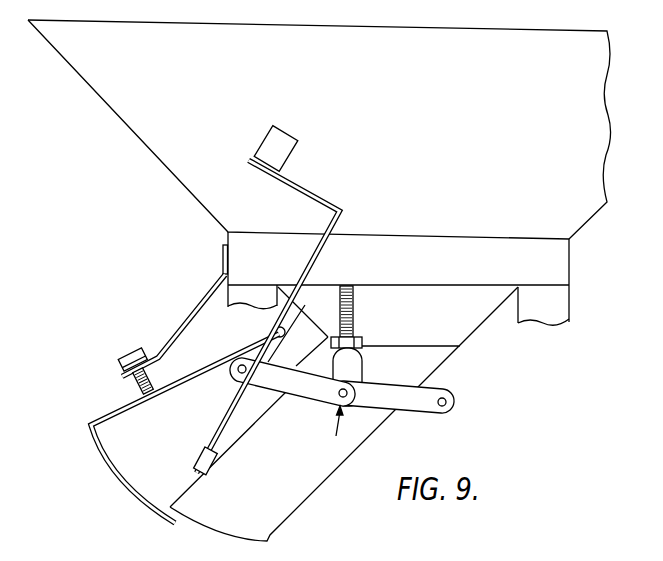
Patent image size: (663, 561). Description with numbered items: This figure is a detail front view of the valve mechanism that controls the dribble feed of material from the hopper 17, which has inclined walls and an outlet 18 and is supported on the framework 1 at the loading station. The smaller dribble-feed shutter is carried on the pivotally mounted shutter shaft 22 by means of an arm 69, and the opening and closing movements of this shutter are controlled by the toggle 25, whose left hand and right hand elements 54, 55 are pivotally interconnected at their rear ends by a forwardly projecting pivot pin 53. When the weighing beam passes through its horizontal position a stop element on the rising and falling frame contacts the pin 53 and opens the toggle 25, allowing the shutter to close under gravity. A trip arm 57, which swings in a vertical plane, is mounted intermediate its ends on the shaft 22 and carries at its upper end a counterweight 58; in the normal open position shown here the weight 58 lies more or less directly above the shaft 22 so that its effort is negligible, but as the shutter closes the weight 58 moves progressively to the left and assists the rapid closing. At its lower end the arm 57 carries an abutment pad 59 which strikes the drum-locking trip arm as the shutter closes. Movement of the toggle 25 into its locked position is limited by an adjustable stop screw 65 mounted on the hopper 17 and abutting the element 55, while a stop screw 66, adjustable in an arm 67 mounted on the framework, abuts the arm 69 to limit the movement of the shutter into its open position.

The framework 1 is at (557, 273).
The hopper 17 is at (431, 118).
The outlet 18 is at (256, 500).
The shutter shaft 22 is at (285, 329).
The toggle linkage 25 is at (336, 432).
The pivot pin 53 is at (348, 390).
The left hand toggle element 54 is at (305, 388).
The right hand toggle element 55 is at (422, 402).
The trip arm 57 is at (345, 213).
The counterweight 58 is at (286, 133).
The abutment pad 59 is at (206, 463).
The stop screw 65 is at (355, 321).
The stop screw 66 is at (130, 352).
The arm 67 is at (210, 289).
The shutter arm 69 is at (212, 363).